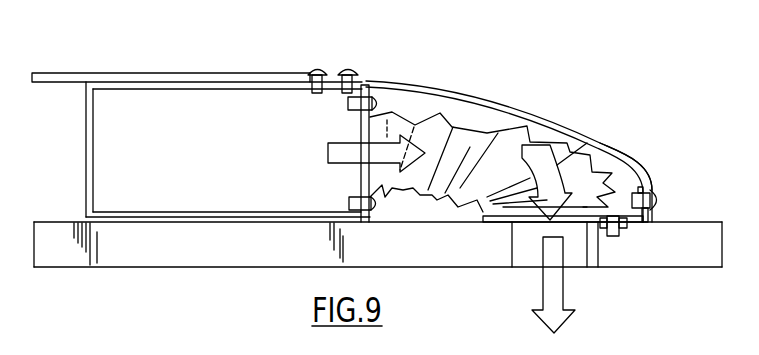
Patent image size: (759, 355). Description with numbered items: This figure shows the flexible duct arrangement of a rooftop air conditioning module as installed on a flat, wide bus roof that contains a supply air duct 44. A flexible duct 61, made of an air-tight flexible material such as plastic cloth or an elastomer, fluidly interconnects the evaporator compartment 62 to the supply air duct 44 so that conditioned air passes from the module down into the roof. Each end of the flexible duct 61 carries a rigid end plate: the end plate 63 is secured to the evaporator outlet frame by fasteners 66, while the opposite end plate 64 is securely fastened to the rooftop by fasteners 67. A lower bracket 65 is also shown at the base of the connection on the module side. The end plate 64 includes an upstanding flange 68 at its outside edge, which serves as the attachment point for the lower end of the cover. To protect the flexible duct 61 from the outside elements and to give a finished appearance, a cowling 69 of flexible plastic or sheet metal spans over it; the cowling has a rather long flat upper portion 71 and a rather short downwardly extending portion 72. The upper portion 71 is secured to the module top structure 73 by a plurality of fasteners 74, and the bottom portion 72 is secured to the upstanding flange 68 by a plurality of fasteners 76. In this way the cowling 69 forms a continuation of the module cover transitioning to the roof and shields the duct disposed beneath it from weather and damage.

The supply air duct 44 is at (520, 280).
The flexible duct 61 is at (472, 143).
The evaporator compartment 62 is at (290, 107).
The end plate 63 is at (366, 120).
The end plate 64 is at (586, 268).
The lower bracket 65 is at (368, 218).
The fasteners 66 is at (380, 104).
The fasteners 67 is at (614, 238).
The upstanding flange 68 is at (653, 220).
The cowling 69 is at (580, 125).
The upper portion 71 is at (620, 142).
The downwardly extending portion 72 is at (653, 182).
The module top structure 73 is at (248, 102).
The fasteners 74 is at (347, 72).
The fasteners 76 is at (660, 198).